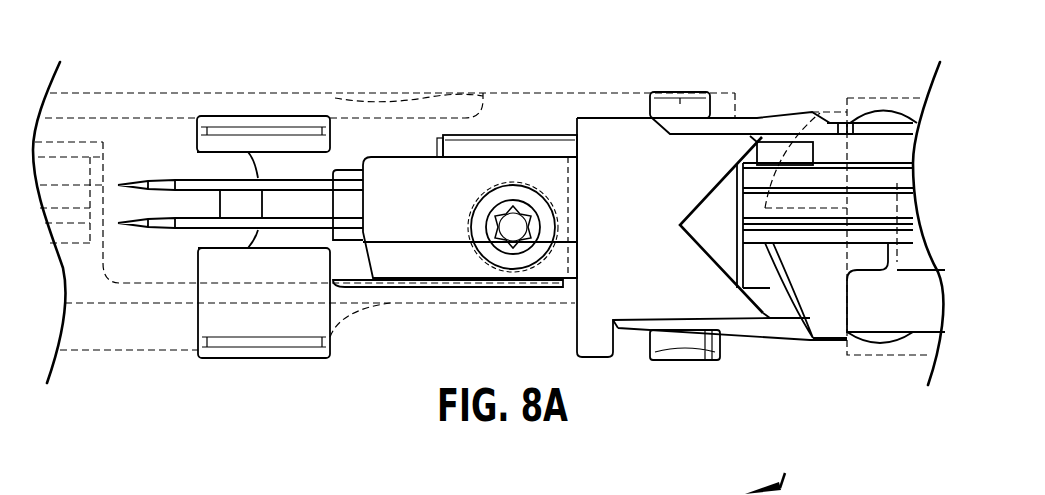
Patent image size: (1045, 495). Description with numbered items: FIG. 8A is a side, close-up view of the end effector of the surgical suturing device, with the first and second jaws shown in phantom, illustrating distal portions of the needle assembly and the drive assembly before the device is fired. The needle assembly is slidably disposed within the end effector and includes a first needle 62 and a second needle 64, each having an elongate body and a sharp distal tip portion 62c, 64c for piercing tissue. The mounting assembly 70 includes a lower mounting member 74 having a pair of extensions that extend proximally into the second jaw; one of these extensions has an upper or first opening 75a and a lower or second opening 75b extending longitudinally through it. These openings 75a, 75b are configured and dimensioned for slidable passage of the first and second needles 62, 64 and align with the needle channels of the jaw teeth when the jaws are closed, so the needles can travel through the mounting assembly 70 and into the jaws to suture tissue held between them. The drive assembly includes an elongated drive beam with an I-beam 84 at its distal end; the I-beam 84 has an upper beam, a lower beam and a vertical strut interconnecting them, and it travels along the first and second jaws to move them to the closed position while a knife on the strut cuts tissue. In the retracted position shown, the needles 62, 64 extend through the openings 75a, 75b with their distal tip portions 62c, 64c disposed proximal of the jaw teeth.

The sharp distal tip portion 62c is at (165, 178).
The sharp distal tip portion 64c is at (163, 232).
The I-beam 84 is at (265, 117).
The first opening 75a is at (363, 177).
The second opening 75b is at (367, 230).
The lower mounting member 74 is at (458, 203).
The mounting assembly 70 is at (497, 108).
The first needle 62 is at (760, 168).
The second needle 64 is at (752, 233).